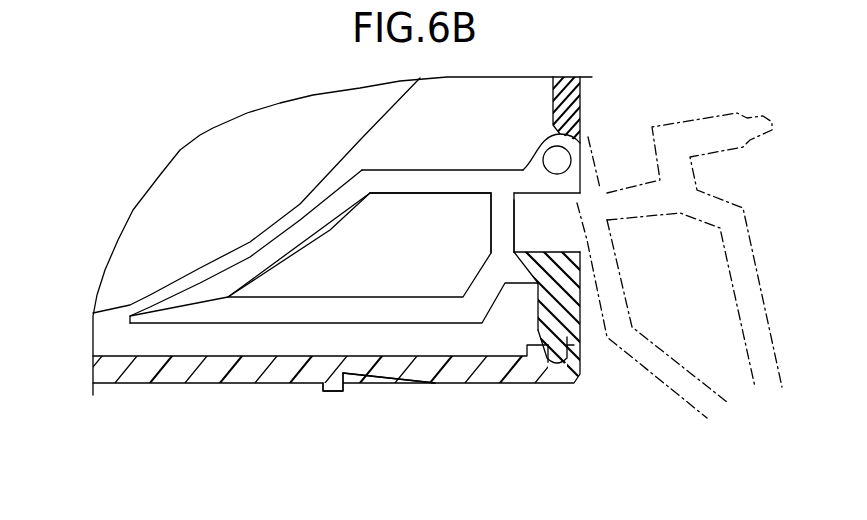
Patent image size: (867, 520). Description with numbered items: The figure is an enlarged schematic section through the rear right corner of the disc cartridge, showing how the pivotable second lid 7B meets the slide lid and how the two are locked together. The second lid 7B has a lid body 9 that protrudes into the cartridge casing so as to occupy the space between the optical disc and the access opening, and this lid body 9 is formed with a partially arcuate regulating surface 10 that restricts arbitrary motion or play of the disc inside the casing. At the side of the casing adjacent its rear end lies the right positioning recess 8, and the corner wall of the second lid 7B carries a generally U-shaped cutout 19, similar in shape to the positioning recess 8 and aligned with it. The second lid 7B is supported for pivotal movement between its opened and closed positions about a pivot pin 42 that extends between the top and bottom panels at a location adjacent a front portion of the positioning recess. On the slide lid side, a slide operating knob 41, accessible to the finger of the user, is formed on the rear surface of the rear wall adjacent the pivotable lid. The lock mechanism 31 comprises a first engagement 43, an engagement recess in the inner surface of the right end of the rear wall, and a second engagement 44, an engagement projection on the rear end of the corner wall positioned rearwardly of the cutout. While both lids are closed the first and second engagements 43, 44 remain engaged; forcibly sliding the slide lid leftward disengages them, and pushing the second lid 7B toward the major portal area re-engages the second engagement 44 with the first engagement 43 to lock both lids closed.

The second lid 7B is at (296, 206).
The positioning recess 8 is at (552, 222).
The lid body 9 is at (393, 184).
The regulating surface 10 is at (257, 251).
The U-shaped cutout 19 is at (560, 250).
The lock mechanism 31 is at (603, 324).
The slide operating knob 41 is at (333, 385).
The pivot pin 42 is at (557, 161).
The first engagement 43 is at (567, 345).
The second engagement 44 is at (548, 346).